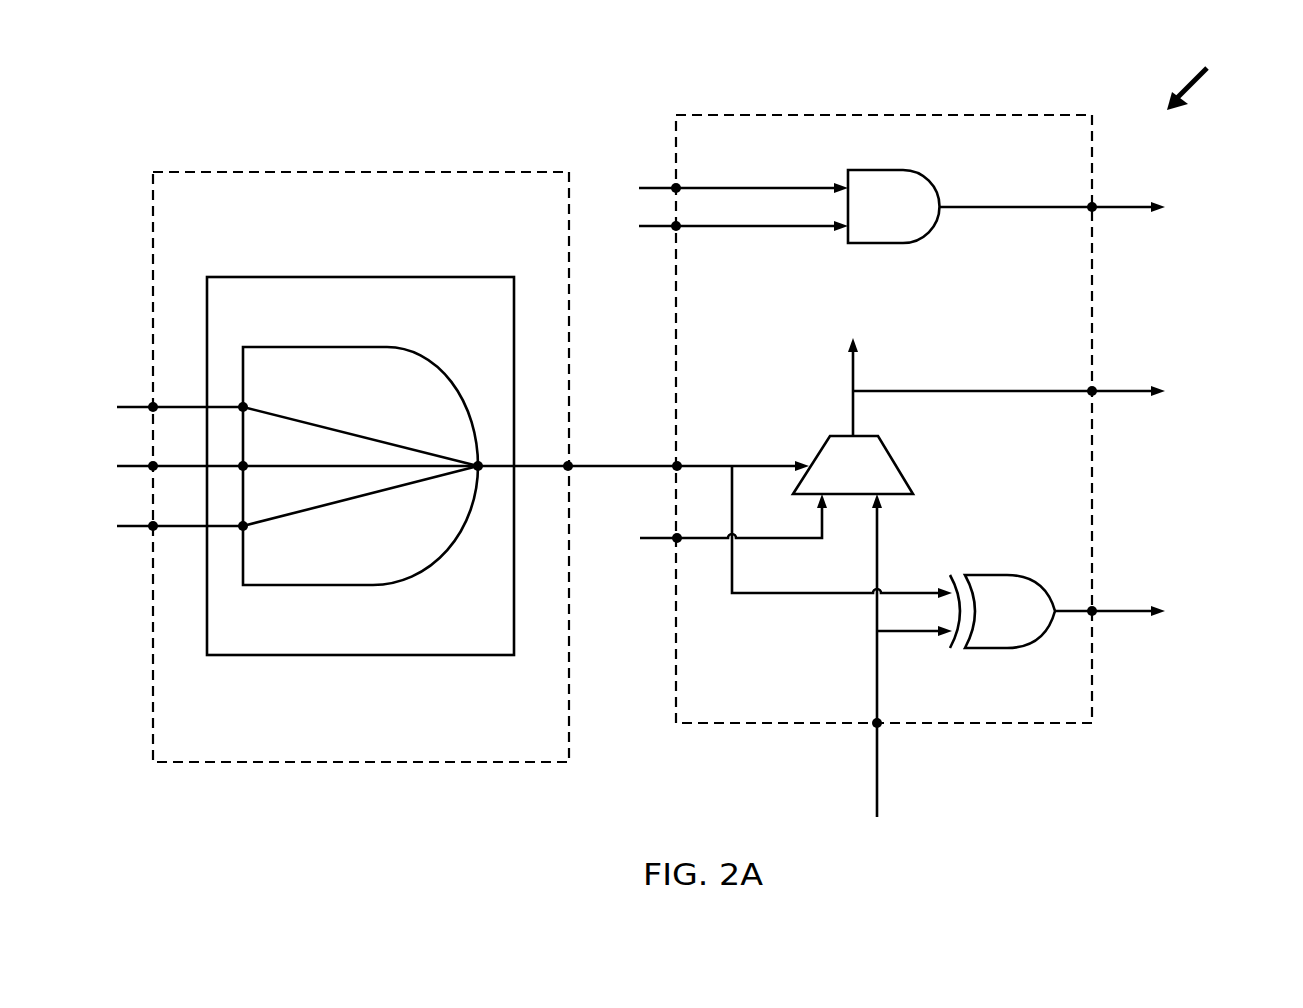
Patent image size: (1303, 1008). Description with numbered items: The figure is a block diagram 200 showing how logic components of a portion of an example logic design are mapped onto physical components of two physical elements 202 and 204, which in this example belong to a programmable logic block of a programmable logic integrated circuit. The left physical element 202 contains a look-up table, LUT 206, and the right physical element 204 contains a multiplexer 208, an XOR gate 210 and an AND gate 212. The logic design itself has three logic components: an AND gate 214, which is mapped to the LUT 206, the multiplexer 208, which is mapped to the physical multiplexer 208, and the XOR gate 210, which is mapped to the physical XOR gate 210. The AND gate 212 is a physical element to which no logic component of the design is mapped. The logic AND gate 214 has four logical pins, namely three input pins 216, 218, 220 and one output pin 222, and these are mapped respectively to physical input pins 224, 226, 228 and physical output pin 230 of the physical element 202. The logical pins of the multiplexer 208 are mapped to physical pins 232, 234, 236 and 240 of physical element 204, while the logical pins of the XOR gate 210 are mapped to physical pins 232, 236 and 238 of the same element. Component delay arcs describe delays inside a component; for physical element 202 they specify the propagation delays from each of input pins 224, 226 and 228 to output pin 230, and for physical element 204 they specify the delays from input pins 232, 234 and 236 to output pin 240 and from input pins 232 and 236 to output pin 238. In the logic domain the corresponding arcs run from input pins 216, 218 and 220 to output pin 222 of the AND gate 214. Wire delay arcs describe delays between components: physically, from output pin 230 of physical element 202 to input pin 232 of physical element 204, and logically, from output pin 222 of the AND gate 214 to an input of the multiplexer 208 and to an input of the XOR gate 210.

The block diagram 200 is at (1214, 78).
The physical element 202 is at (495, 172).
The physical element 204 is at (1017, 115).
The LUT 206 is at (440, 277).
The multiplexer 208 is at (892, 452).
The XOR gate 210 is at (1000, 575).
The AND gate 212 is at (905, 170).
The AND gate 214 is at (385, 347).
The input pin 216 is at (245, 405).
The input pin 218 is at (245, 464).
The input pin 220 is at (245, 528).
The output pin 222 is at (475, 458).
The physical input pin 224 is at (151, 400).
The physical input pin 226 is at (151, 460).
The physical input pin 228 is at (151, 520).
The physical output pin 230 is at (570, 464).
The physical input pin 232 is at (679, 464).
The physical input pin 234 is at (675, 540).
The physical input pin 236 is at (879, 721).
The physical output pin 238 is at (1094, 609).
The physical output pin 240 is at (1094, 389).